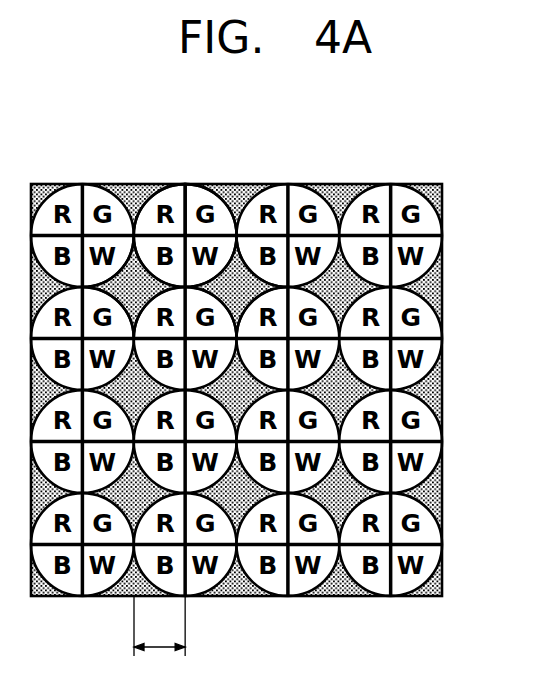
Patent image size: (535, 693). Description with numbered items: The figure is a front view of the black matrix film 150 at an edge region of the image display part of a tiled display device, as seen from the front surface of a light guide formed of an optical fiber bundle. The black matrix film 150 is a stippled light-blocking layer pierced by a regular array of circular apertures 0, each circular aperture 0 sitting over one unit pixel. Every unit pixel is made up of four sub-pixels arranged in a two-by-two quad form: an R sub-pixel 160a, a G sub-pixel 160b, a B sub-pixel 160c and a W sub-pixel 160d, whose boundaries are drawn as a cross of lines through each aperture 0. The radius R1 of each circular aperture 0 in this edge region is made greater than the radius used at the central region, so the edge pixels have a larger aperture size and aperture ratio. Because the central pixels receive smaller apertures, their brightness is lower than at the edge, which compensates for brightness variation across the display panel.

The circular aperture 0 is at (443, 186).
The black matrix film 150 is at (443, 268).
The R sub-pixel 160a is at (155, 207).
The G sub-pixel 160b is at (217, 207).
The B sub-pixel 160c is at (150, 250).
The W sub-pixel 160d is at (227, 248).
The radius of the circular aperture at the edge region R1 is at (159, 626).